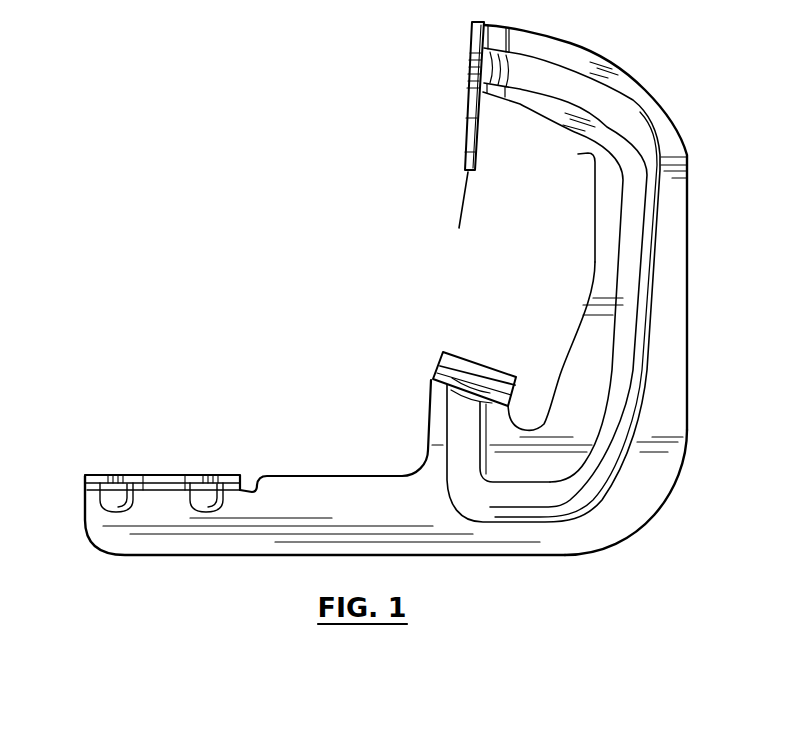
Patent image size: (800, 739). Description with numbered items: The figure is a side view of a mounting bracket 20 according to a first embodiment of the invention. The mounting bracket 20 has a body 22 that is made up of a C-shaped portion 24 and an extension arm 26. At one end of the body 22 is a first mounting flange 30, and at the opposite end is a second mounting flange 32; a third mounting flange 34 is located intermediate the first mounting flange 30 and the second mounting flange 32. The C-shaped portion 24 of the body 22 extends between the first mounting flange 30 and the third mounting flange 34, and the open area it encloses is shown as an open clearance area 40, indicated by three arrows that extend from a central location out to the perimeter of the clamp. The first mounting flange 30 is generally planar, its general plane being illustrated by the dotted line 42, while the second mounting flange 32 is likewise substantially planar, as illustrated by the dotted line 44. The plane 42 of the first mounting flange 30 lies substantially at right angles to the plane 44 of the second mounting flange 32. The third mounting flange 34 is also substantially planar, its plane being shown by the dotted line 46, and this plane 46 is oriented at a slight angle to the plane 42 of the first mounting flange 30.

The mounting bracket 20 is at (689, 217).
The body 22 is at (654, 514).
The C-shaped portion 24 is at (578, 154).
The extension arm 26 is at (268, 513).
The first mounting flange 30 is at (470, 42).
The second mounting flange 32 is at (168, 474).
The third mounting flange 34 is at (452, 352).
The open clearance area 40 is at (558, 266).
The dotted line (plane of first mounting flange) 42 is at (460, 212).
The dotted line (plane of second mounting flange) 44 is at (278, 475).
The dotted line (plane of third mounting flange) 46 is at (515, 376).